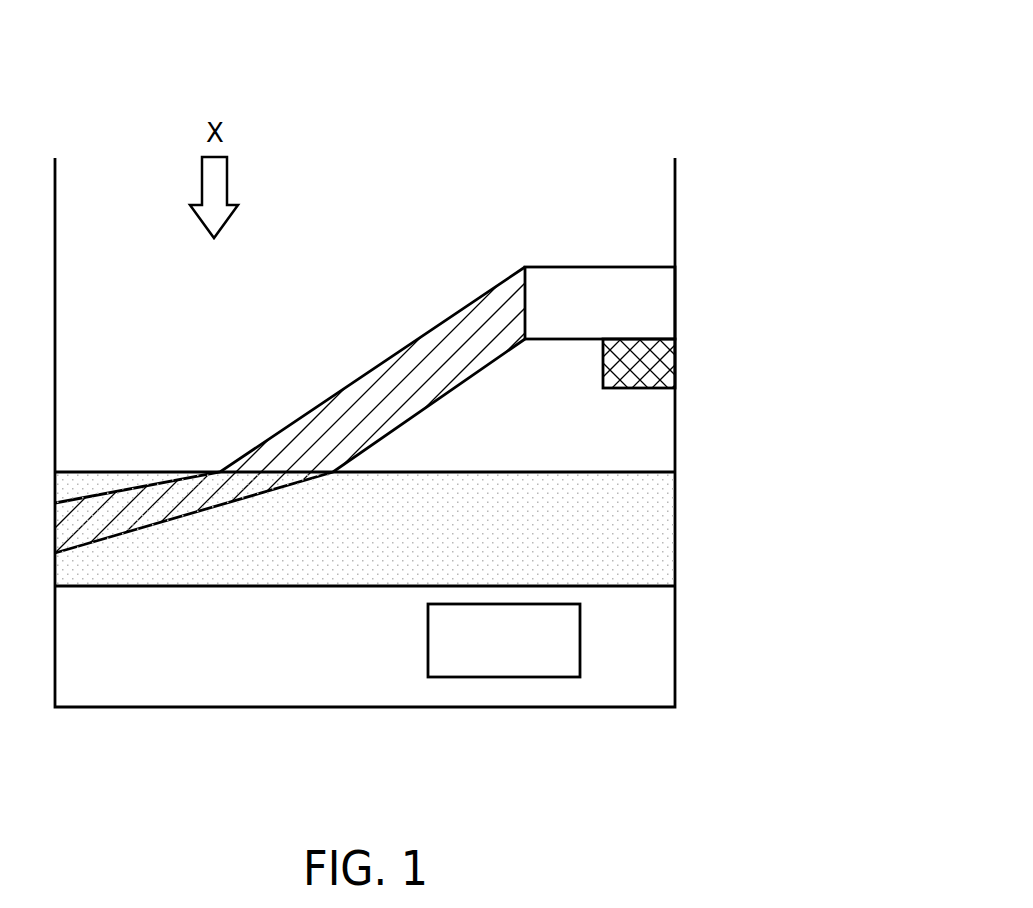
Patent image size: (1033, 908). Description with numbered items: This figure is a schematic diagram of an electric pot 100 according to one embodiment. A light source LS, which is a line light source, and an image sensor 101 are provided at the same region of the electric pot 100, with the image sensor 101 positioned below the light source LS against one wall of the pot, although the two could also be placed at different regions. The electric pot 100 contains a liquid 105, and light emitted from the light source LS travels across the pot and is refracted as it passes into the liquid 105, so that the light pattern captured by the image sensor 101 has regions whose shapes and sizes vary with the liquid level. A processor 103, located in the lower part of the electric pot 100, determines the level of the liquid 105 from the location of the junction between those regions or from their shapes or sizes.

The electric pot 100 is at (600, 90).
The light source LS is at (667, 285).
The image sensor 101 is at (667, 360).
The liquid 105 is at (665, 527).
The processor 103 is at (554, 677).